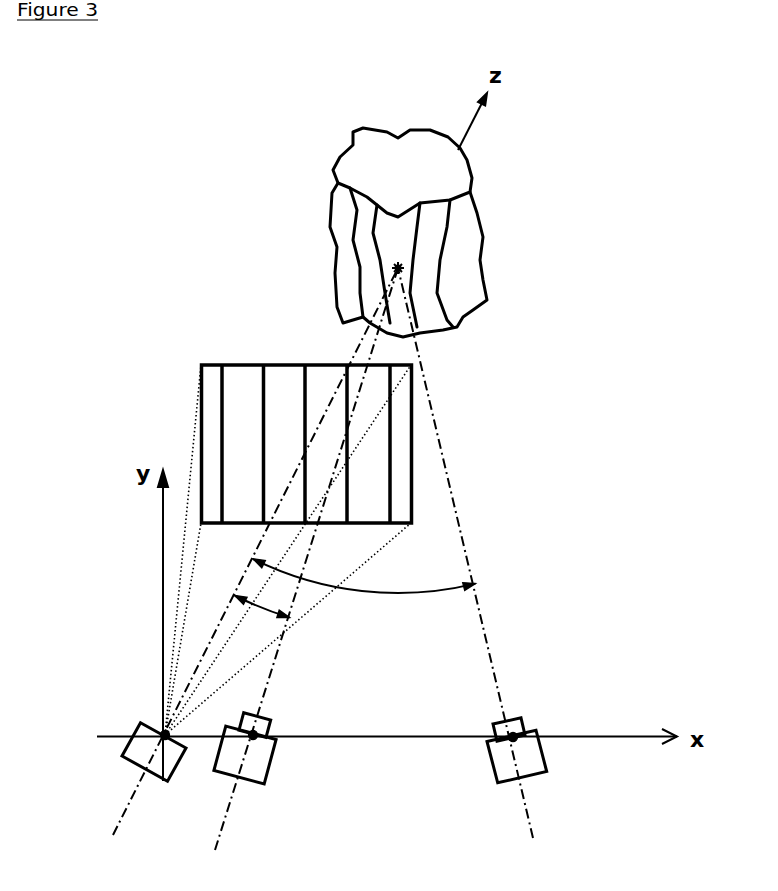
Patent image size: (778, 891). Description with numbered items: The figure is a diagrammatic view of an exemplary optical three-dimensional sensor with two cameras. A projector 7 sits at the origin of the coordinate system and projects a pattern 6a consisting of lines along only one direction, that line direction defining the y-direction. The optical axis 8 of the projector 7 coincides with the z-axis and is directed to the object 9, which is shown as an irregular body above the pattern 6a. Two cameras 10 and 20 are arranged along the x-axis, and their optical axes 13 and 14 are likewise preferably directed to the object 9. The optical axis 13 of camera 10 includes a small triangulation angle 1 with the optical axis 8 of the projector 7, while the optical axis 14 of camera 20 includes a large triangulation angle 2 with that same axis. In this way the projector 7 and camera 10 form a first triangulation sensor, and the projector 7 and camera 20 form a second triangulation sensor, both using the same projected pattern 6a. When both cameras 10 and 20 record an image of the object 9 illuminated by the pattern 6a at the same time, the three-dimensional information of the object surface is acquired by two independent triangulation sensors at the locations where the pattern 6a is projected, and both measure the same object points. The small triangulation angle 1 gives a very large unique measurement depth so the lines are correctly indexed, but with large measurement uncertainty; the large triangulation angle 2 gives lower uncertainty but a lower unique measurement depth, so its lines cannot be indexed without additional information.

The triangulation angle 1 is at (262, 614).
The triangulation angle 2 is at (364, 576).
The pattern 6a is at (307, 431).
The projector 7 is at (146, 752).
The optical axis of the projector 8 is at (247, 562).
The object 9 is at (417, 232).
The camera 10 is at (256, 748).
The optical axis 13 is at (298, 571).
The optical axis 14 is at (474, 567).
The camera 20 is at (531, 750).